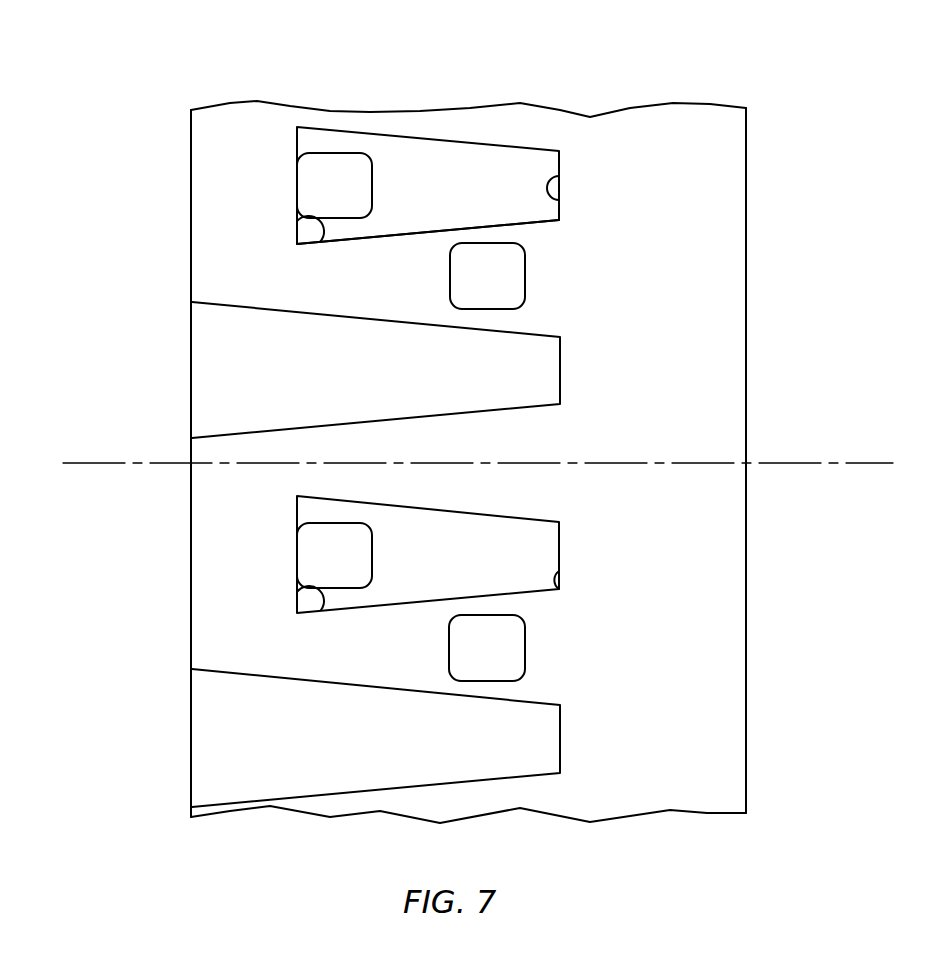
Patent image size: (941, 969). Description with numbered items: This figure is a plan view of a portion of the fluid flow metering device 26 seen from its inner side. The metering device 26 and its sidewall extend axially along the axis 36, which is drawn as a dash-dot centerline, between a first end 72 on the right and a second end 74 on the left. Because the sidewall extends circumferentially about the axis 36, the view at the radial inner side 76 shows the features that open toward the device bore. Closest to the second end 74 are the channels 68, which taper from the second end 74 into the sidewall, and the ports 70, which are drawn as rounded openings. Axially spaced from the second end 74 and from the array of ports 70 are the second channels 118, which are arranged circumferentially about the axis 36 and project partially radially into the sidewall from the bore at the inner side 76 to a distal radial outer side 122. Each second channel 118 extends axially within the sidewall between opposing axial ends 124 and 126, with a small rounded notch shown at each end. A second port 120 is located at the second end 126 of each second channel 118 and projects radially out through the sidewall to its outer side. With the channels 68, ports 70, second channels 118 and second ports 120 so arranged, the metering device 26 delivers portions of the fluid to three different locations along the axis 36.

The metering device 26 is at (820, 88).
The axis 36 is at (840, 463).
The channel 68 is at (520, 373).
The port 70 is at (503, 280).
The first end 72 is at (747, 287).
The second end 74 is at (192, 258).
The radial inner side 76 is at (714, 214).
The second channel 118 is at (470, 172).
The second port 120 is at (337, 172).
The distal radial outer side 122 is at (422, 220).
The axial end 124 is at (559, 200).
The second end 126 is at (322, 241).